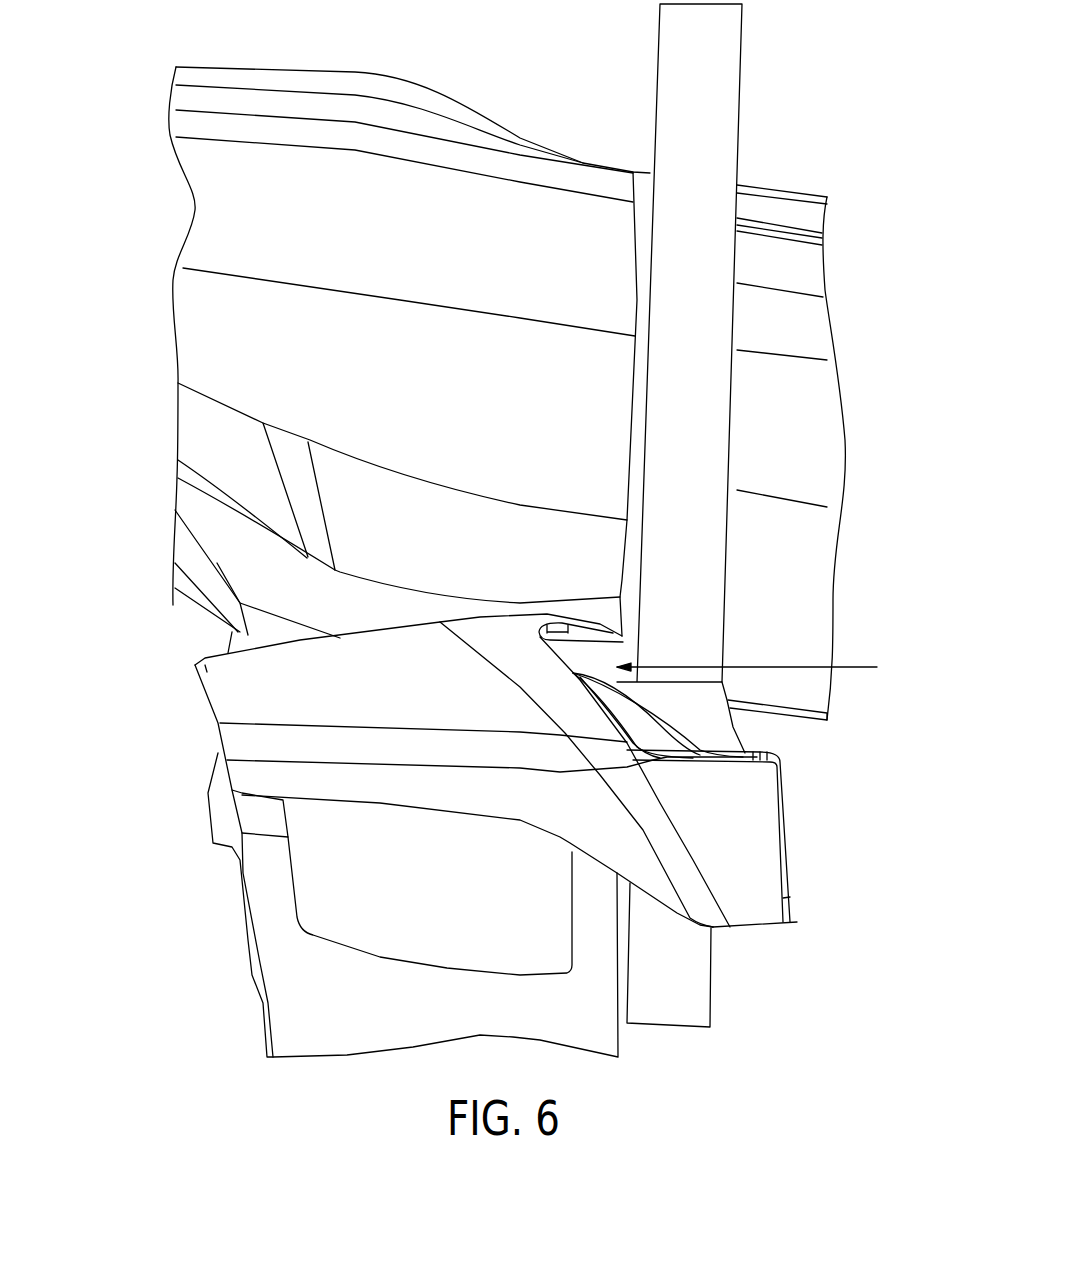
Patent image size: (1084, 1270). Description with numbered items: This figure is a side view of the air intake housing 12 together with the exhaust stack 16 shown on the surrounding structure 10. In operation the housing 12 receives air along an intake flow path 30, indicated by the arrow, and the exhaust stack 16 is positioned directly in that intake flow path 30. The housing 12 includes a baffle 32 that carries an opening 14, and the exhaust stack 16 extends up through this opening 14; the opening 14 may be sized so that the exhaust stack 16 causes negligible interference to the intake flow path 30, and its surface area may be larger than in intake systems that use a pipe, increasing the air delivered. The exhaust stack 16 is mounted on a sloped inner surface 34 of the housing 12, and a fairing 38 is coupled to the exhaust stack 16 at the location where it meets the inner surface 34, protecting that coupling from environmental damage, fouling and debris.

The vehicle body structure 10 is at (813, 330).
The air intake housing 12 is at (270, 697).
The opening 14 is at (613, 650).
The exhaust stack 16 is at (722, 82).
The intake flow path 30 is at (753, 667).
The baffle 32 is at (530, 643).
The inner surface 34 is at (650, 737).
The fairing 38 is at (705, 717).